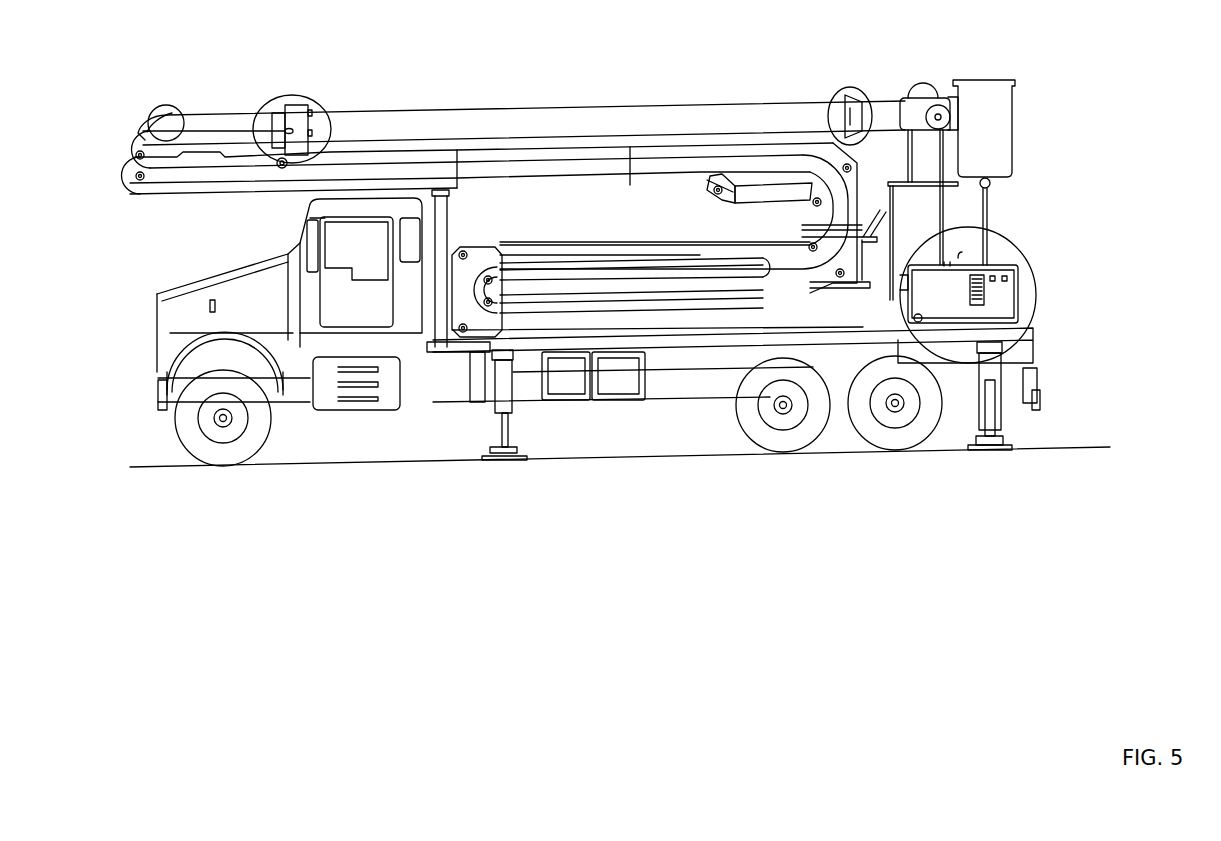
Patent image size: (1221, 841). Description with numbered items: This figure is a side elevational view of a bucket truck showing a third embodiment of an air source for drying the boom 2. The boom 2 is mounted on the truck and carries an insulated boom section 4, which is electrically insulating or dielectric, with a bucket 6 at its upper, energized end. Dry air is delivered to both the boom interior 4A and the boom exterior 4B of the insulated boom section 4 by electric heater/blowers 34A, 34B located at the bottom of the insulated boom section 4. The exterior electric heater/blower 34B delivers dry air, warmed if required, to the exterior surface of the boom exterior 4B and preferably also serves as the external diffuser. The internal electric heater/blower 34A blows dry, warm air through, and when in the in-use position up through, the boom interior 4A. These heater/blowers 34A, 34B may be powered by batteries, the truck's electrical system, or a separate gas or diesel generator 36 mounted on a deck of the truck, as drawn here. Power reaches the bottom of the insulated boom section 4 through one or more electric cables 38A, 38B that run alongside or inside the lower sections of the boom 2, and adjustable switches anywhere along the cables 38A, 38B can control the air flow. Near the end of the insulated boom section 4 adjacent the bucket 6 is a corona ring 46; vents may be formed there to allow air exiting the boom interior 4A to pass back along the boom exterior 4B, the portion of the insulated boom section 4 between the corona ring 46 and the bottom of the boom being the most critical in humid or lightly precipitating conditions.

The boom 2 is at (174, 212).
The insulated boom section 4 is at (797, 103).
The boom interior 4A is at (563, 125).
The boom exterior 4B is at (675, 105).
The bucket 6 is at (1012, 138).
The internal electric heater/blower 34A is at (160, 105).
The exterior electric heater/blower 34B is at (300, 100).
The generator 36 is at (1002, 290).
The electric cable 38A is at (697, 165).
The electric cable 38B is at (483, 160).
The corona ring 46 is at (861, 88).